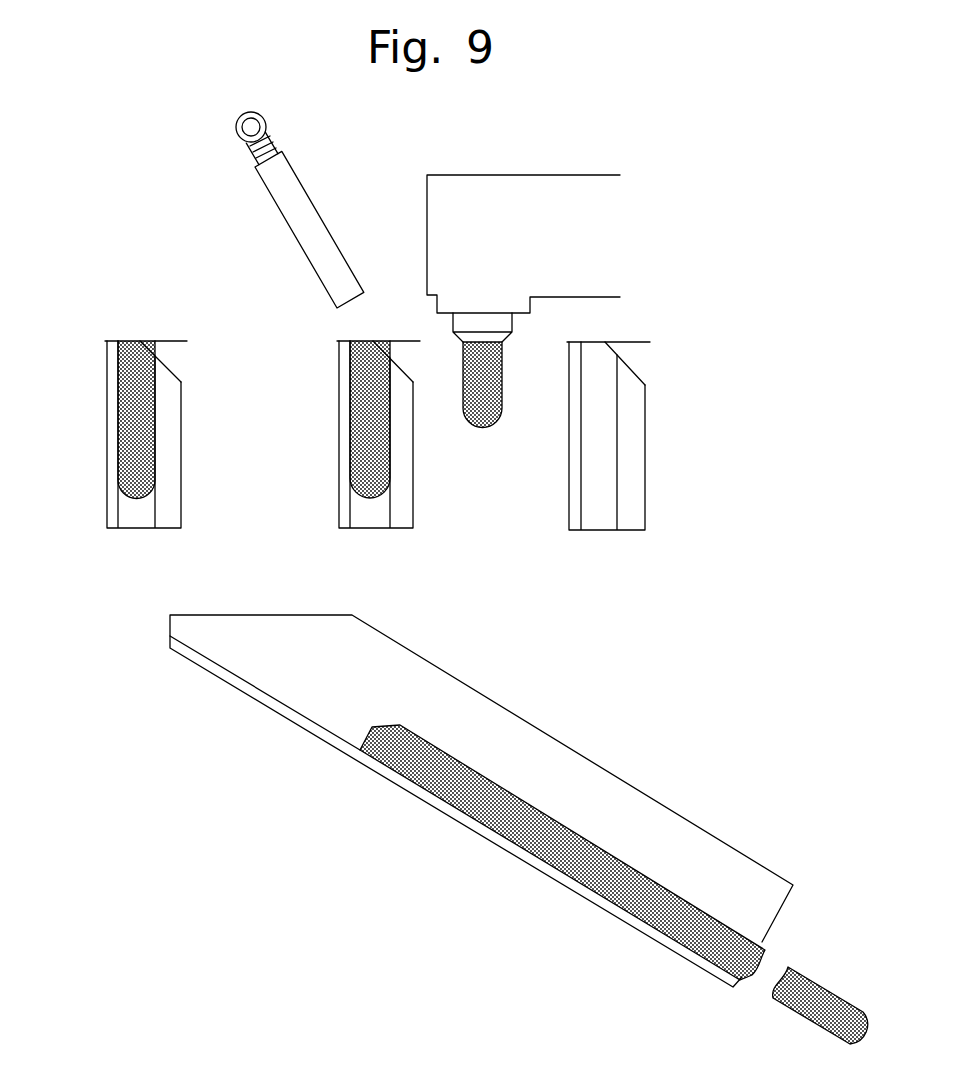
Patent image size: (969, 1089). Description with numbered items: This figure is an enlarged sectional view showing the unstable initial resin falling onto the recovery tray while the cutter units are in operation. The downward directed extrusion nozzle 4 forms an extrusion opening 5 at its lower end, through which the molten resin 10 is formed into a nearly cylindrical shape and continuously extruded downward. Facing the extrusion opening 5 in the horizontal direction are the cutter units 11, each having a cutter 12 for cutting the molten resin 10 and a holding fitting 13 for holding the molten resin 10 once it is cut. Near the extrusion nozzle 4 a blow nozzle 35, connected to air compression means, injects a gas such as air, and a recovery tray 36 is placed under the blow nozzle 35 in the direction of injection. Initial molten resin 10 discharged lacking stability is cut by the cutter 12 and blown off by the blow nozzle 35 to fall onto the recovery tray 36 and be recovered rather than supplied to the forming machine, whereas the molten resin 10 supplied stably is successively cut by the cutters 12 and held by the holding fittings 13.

The extrusion nozzle 4 is at (505, 320).
The extrusion opening 5 is at (462, 343).
The molten resin 10 is at (146, 406).
The cutter unit 11 is at (107, 437).
The cutter 12 is at (168, 341).
The holding fitting 13 is at (160, 460).
The blow nozzle 35 is at (308, 202).
The recovery tray 36 is at (665, 805).